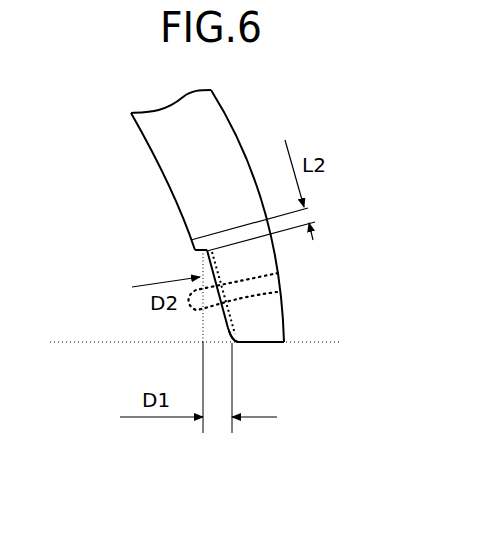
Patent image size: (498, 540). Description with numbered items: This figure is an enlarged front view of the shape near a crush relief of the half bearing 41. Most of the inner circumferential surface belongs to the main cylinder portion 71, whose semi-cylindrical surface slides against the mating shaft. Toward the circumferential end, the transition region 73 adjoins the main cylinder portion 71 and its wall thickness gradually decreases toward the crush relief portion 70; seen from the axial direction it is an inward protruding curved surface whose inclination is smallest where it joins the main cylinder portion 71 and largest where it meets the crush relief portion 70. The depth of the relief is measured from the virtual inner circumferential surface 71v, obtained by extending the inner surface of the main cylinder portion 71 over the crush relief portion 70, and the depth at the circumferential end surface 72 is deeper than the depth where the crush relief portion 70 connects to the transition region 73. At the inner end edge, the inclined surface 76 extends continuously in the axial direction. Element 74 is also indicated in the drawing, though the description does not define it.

The half bearing 41 is at (307, 125).
The crush relief portion 70 is at (229, 328).
The main cylinder portion 71 is at (147, 142).
The virtual inner circumferential surface 71v is at (218, 272).
The circumferential end surface 72 is at (270, 343).
The transition region 73 is at (195, 251).
The recess 74 is at (280, 293).
The inclined surface 76 is at (234, 343).